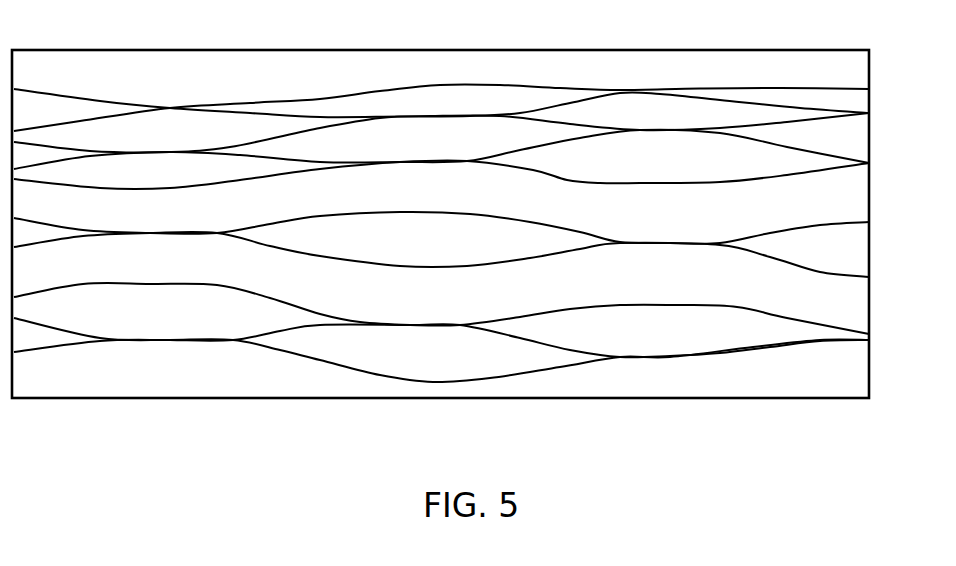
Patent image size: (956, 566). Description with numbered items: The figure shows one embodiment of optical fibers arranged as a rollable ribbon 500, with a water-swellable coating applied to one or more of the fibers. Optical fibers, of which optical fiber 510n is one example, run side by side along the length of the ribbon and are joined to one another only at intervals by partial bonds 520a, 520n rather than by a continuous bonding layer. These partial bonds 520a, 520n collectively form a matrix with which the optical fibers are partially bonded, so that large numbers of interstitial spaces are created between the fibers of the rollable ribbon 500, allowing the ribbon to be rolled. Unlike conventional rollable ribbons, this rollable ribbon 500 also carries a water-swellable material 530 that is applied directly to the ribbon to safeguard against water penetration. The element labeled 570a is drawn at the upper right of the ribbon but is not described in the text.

The rollable ribbon 500 is at (142, 429).
The optical fiber 510n is at (869, 340).
The partial bond 520a is at (182, 110).
The partial bond 520n is at (658, 358).
The water-swellable material 530 is at (502, 85).
The output port a 570a is at (869, 80).